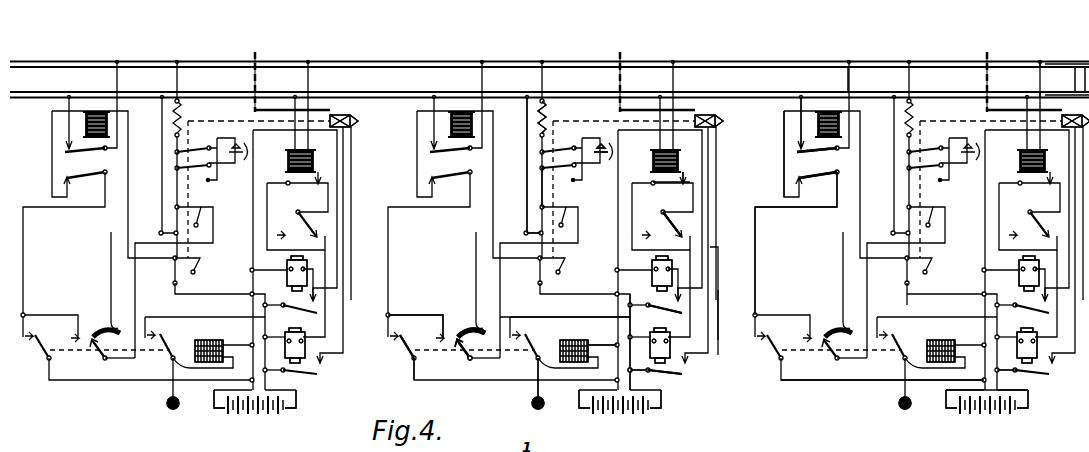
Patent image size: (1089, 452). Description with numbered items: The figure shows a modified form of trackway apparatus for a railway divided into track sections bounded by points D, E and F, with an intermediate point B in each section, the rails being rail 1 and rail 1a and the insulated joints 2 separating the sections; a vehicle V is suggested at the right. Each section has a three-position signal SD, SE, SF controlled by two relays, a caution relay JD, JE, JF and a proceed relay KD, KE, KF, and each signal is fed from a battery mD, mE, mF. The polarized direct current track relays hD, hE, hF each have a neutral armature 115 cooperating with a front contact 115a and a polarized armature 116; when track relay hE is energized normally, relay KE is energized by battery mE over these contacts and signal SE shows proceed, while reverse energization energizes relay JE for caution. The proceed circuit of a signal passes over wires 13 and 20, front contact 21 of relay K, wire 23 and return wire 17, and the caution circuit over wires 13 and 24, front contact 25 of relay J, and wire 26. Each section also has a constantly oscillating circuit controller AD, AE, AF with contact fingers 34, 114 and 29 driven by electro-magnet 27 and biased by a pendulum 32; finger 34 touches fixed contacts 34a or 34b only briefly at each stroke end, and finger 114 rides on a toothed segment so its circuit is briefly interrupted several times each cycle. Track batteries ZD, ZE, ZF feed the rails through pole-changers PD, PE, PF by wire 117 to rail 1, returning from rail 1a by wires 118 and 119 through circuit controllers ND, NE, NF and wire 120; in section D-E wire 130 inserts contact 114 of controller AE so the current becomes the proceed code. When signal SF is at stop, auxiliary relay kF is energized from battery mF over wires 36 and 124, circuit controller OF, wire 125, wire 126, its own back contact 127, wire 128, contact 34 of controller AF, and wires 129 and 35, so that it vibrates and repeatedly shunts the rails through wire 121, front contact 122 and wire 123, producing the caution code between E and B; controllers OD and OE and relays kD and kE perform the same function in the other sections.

The rail 1 is at (402, 55).
The rail 1a is at (549, 81).
The section insulation joint 2 is at (255, 64).
The wire 13 is at (655, 380).
The wire 17 is at (614, 130).
The wire 20 is at (638, 363).
The front contact of relay K 21 is at (683, 376).
The wire 23 is at (718, 305).
The wire 24 is at (640, 342).
The front contact of relay J 25 is at (683, 311).
The wire 26 is at (712, 246).
The electro-magnet 27 is at (577, 348).
The contact finger 29 is at (536, 362).
The pendulum 32 is at (534, 404).
The contact finger 34 is at (410, 362).
The fixed contact 34a is at (400, 340).
The fixed contact 34b is at (586, 326).
The wire 35 is at (956, 408).
The wire 36 is at (1006, 380).
The finger 114 is at (857, 360).
The neutral armature 115 is at (683, 190).
The front contact 115a is at (684, 180).
The polarized armature 116 is at (663, 235).
The wire 117 is at (548, 128).
The wire 118 is at (525, 120).
The wire 119 is at (527, 233).
The wire 120 is at (544, 191).
The wire 121 is at (848, 76).
The front contact of relay k 122 is at (795, 150).
The wire 123 is at (795, 106).
The wire 124 is at (990, 300).
The wire 125 is at (855, 210).
The wire 126 is at (784, 171).
The back contact of relay k 127 is at (795, 182).
The wire 128 is at (750, 262).
The wire 129 is at (890, 380).
The wire 130 is at (500, 294).
The point B is at (660, 243).
The point D is at (252, 45).
The point E is at (476, 244).
The point F is at (948, 244).
The vehicle V is at (1079, 45).
The auxiliary relay kD is at (84, 128).
The auxiliary relay kE is at (449, 128).
The auxiliary relay kF is at (840, 120).
The track relay hD is at (286, 162).
The track relay hE is at (651, 162).
The track relay hF is at (1020, 162).
The pole-changer PD is at (176, 160).
The pole-changer PE is at (541, 163).
The pole-changer PF is at (928, 152).
The battery ZD is at (220, 187).
The battery ZE is at (592, 177).
The battery ZF is at (962, 180).
The circuit controller ND is at (203, 220).
The circuit controller NE is at (570, 217).
The circuit controller NF is at (935, 220).
The circuit controller OD is at (151, 277).
The circuit controller OE is at (513, 275).
The circuit controller OF is at (948, 257).
The relay J JD is at (285, 275).
The relay J JE is at (650, 275).
The relay J JF is at (1017, 273).
The relay K KD is at (306, 345).
The relay K KE is at (672, 345).
The relay K KF is at (1037, 345).
The circuit controller AD is at (195, 340).
The circuit controller AE is at (561, 342).
The circuit controller AF is at (928, 342).
The battery mD is at (255, 412).
The battery mE is at (620, 414).
The battery mF is at (987, 414).
The signal SD is at (349, 113).
The signal SE is at (736, 126).
The signal SF is at (1066, 130).